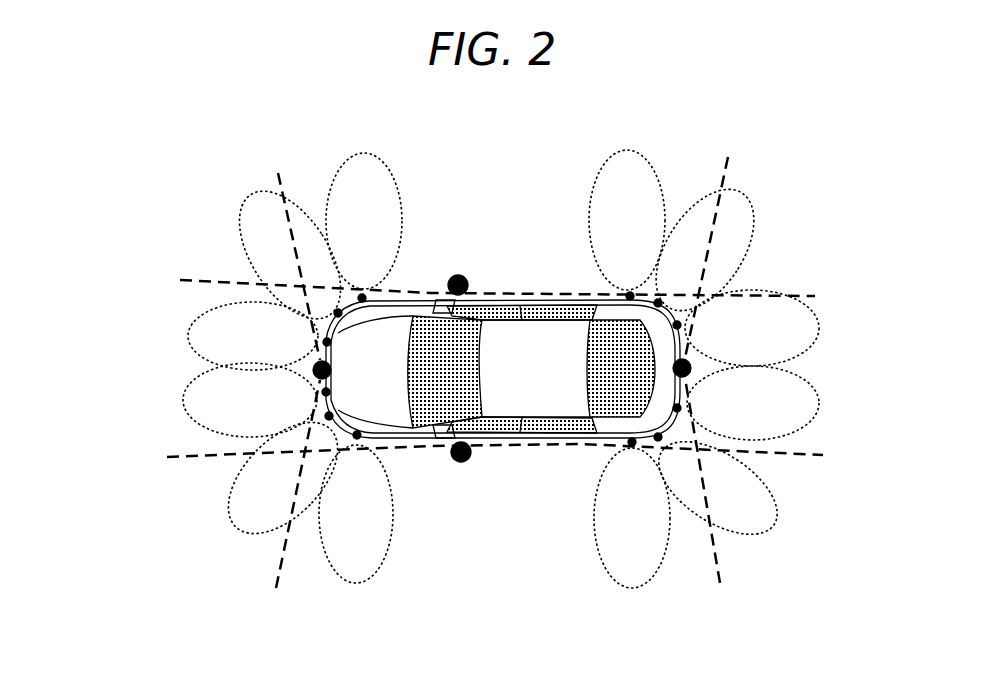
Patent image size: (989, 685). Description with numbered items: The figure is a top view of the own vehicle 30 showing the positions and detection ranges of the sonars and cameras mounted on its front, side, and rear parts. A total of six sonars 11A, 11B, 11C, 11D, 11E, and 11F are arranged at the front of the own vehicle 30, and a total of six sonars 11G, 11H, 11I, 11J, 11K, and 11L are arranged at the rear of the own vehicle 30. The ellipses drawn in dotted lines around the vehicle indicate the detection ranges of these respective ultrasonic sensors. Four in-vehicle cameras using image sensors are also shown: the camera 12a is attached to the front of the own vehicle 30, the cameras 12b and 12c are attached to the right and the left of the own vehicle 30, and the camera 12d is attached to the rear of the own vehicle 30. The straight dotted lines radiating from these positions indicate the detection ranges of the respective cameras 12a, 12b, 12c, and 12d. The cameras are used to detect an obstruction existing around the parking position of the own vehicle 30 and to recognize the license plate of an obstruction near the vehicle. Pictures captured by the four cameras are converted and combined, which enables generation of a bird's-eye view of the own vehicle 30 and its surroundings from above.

The own vehicle 30 is at (520, 283).
The sonar 11A is at (362, 298).
The sonar 11B is at (338, 313).
The sonar 11C is at (327, 342).
The sonar 11D is at (326, 392).
The sonar 11E is at (329, 416).
The sonar 11F is at (357, 435).
The sonar 11G is at (630, 296).
The sonar 11H is at (658, 303).
The sonar 11I is at (677, 325).
The sonar 11J is at (677, 408).
The sonar 11K is at (658, 437).
The sonar 11L is at (632, 442).
The camera 12a is at (313, 368).
The camera 12b is at (452, 280).
The camera 12c is at (450, 458).
The camera 12d is at (693, 368).